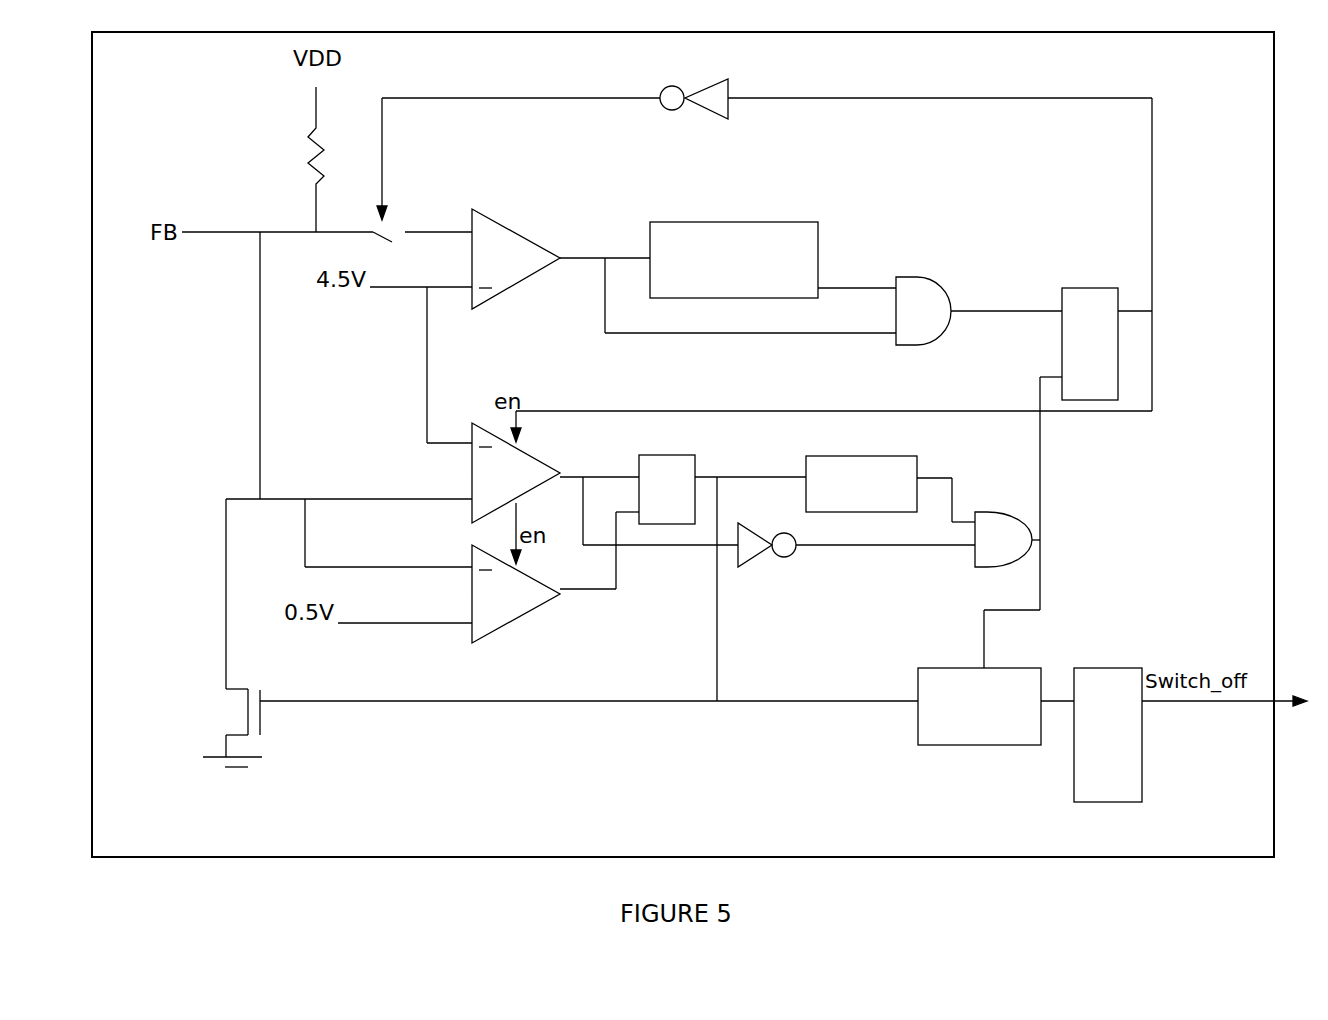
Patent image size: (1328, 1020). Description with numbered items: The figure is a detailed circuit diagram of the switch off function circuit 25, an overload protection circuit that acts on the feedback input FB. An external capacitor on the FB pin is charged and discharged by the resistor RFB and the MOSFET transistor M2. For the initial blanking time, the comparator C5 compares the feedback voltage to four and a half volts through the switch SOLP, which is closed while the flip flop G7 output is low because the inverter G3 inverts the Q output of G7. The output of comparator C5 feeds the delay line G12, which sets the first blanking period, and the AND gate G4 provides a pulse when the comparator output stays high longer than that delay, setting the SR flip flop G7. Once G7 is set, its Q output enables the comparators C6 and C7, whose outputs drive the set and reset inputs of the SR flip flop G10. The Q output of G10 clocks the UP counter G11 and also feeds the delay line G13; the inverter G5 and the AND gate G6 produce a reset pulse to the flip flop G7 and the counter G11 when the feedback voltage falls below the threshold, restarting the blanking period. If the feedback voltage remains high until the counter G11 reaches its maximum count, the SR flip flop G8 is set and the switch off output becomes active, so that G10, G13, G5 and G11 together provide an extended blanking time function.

The switch off function circuit 25 is at (189, 840).
The resistor RFB is at (287, 153).
The switch SOLP is at (422, 170).
The comparator C5 is at (516, 259).
The comparator C6 is at (516, 473).
The comparator C7 is at (516, 594).
The inverter G3 is at (696, 82).
The AND gate G4 is at (923, 297).
The inverter G5 is at (767, 562).
The AND gate G6 is at (1003, 524).
The SR flip flop G7 is at (1090, 329).
The SR flip flop G8 is at (1108, 721).
The SR flip flop G10 is at (667, 475).
The UP counter G11 is at (979, 690).
The delay line G12 is at (734, 239).
The delay line G13 is at (861, 467).
The MOSFET transistor M2 is at (228, 728).